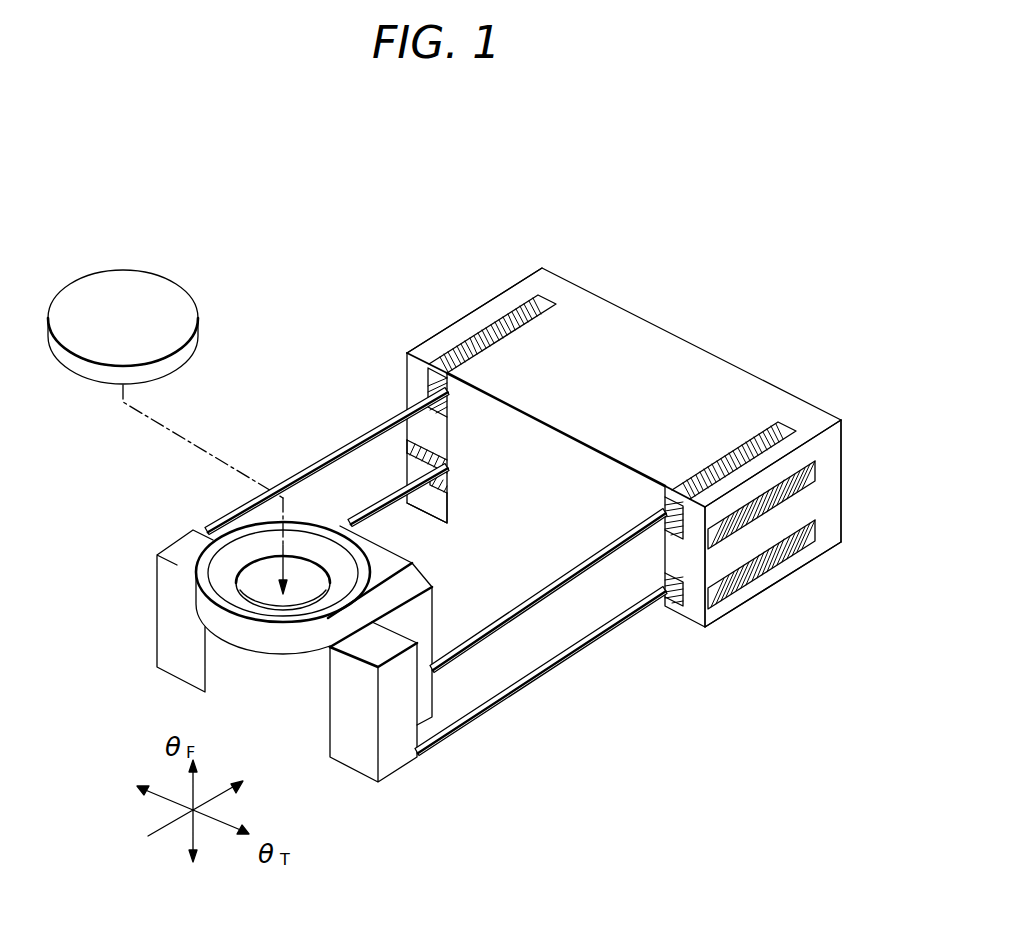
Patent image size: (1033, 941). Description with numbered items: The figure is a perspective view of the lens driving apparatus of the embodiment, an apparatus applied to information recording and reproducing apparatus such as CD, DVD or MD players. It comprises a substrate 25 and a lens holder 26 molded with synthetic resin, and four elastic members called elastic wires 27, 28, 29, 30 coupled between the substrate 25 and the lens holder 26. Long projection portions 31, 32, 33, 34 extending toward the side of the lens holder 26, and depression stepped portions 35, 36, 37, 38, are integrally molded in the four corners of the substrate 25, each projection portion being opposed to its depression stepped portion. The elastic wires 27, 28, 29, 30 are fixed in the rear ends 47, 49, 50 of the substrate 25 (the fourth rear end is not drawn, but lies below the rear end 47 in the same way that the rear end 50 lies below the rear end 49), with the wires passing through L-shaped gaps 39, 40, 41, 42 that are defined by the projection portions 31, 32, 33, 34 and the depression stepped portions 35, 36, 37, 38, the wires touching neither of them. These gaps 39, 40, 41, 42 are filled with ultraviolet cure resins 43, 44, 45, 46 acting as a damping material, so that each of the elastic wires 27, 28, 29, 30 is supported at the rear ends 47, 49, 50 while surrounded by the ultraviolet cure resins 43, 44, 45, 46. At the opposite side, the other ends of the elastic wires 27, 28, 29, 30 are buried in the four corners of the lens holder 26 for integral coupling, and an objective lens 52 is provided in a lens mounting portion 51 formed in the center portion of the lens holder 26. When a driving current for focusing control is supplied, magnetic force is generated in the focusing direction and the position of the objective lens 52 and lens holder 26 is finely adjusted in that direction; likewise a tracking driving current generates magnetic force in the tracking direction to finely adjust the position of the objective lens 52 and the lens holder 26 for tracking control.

The substrate 25 is at (660, 340).
The lens holder 26 is at (337, 727).
The elastic wire 27 is at (330, 446).
The elastic wire 28 is at (415, 481).
The elastic wire 29 is at (530, 598).
The elastic wire 30 is at (540, 690).
The projection portion 31 is at (437, 342).
The projection portion 32 is at (410, 465).
The projection portion 33 is at (738, 502).
The projection portion 34 is at (718, 614).
The depression stepped portion 35 is at (448, 402).
The depression stepped portion 36 is at (448, 485).
The depression stepped portion 37 is at (672, 493).
The depression stepped portion 38 is at (667, 573).
The L-shaped gap 39 is at (533, 300).
The L-shaped gap 40 is at (421, 440).
The L-shaped gap 41 is at (757, 425).
The L-shaped gap 42 is at (672, 610).
The ultraviolet cure resin 43 is at (498, 331).
The ultraviolet cure resin 44 is at (430, 494).
The ultraviolet cure resin 45 is at (815, 477).
The ultraviolet cure resin 46 is at (750, 576).
The rear end 47 is at (557, 289).
The rear end 49 is at (793, 415).
The rear end 50 is at (842, 518).
The lens mounting portion 51 is at (195, 543).
The objective lens 52 is at (160, 285).